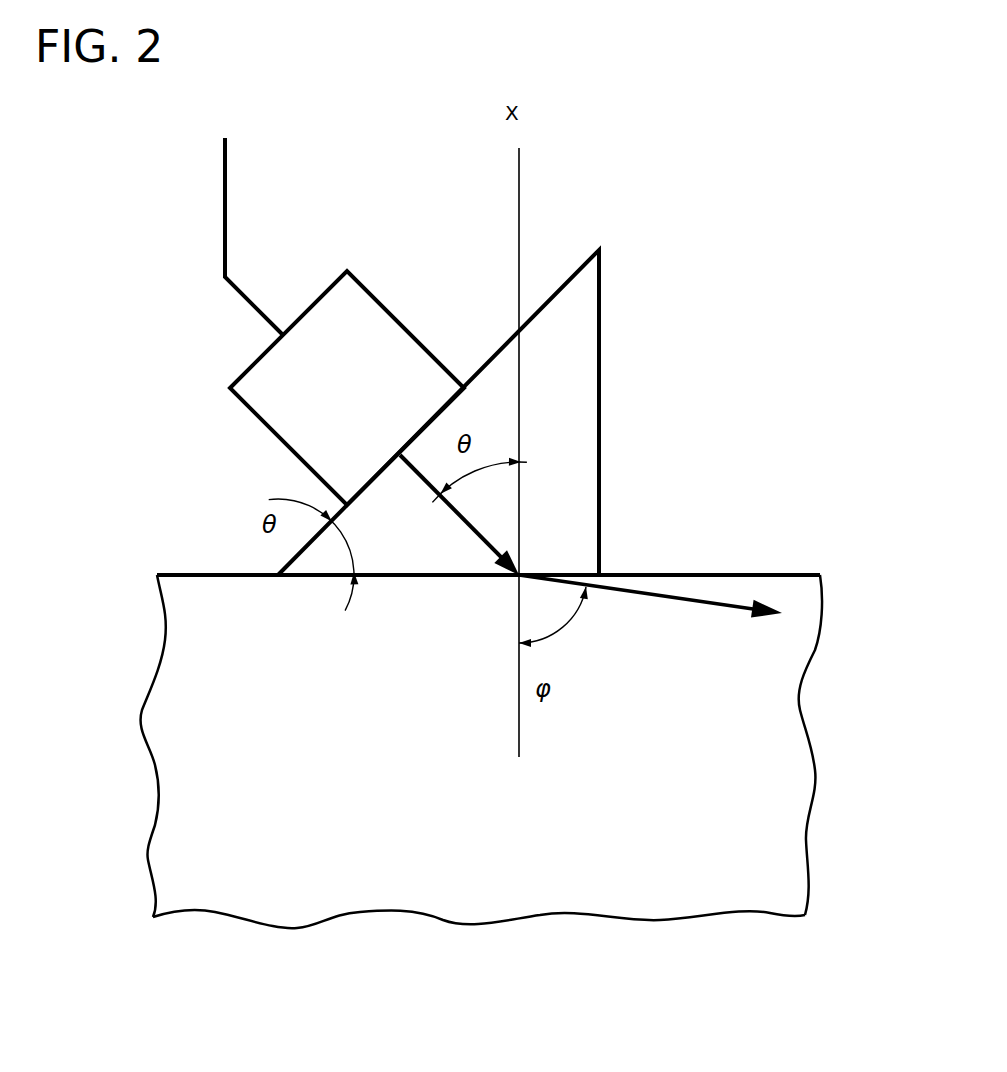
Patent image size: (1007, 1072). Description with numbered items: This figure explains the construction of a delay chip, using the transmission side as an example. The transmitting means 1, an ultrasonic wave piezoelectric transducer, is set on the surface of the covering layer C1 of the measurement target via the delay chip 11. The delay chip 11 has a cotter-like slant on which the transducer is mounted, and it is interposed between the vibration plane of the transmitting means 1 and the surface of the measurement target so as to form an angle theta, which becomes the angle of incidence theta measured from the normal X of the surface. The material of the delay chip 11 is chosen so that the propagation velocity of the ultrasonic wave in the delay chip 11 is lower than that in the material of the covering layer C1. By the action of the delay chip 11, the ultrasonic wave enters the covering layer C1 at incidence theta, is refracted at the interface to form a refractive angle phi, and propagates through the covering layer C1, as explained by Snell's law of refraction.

The transmitting means 1 is at (288, 382).
The delay chip 11 is at (582, 333).
The covering layer C1 is at (193, 630).